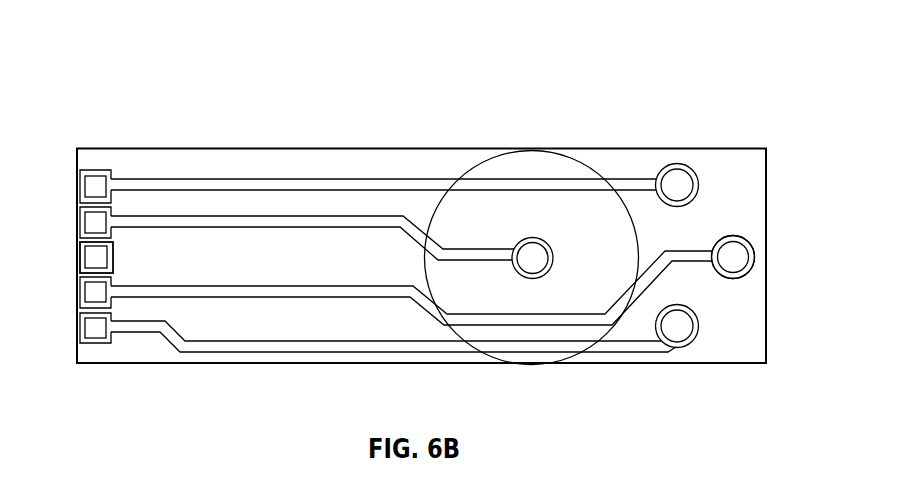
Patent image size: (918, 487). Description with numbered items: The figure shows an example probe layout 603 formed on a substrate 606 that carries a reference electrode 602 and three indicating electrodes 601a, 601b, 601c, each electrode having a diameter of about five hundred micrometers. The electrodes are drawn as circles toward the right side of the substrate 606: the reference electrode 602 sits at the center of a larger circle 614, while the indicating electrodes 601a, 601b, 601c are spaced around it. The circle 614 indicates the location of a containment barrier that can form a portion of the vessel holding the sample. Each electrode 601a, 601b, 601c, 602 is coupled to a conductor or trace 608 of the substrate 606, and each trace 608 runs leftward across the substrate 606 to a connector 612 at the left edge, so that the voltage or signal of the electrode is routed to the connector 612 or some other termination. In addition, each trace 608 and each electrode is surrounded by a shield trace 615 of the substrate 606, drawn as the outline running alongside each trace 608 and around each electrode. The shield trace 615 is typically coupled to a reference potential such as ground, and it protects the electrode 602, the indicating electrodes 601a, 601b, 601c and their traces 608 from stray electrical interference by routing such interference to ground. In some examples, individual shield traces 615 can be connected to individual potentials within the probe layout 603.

The probe layout 603 is at (132, 53).
The shield trace 615 is at (153, 177).
The trace 608 is at (170, 183).
The connector 612 is at (90, 220).
The substrate 606 is at (132, 345).
The reference electrode 602 is at (531, 240).
The circle 614 is at (642, 247).
The indicating electrode 601a is at (688, 183).
The indicating electrode 601b is at (752, 252).
The indicating electrode 601c is at (690, 323).